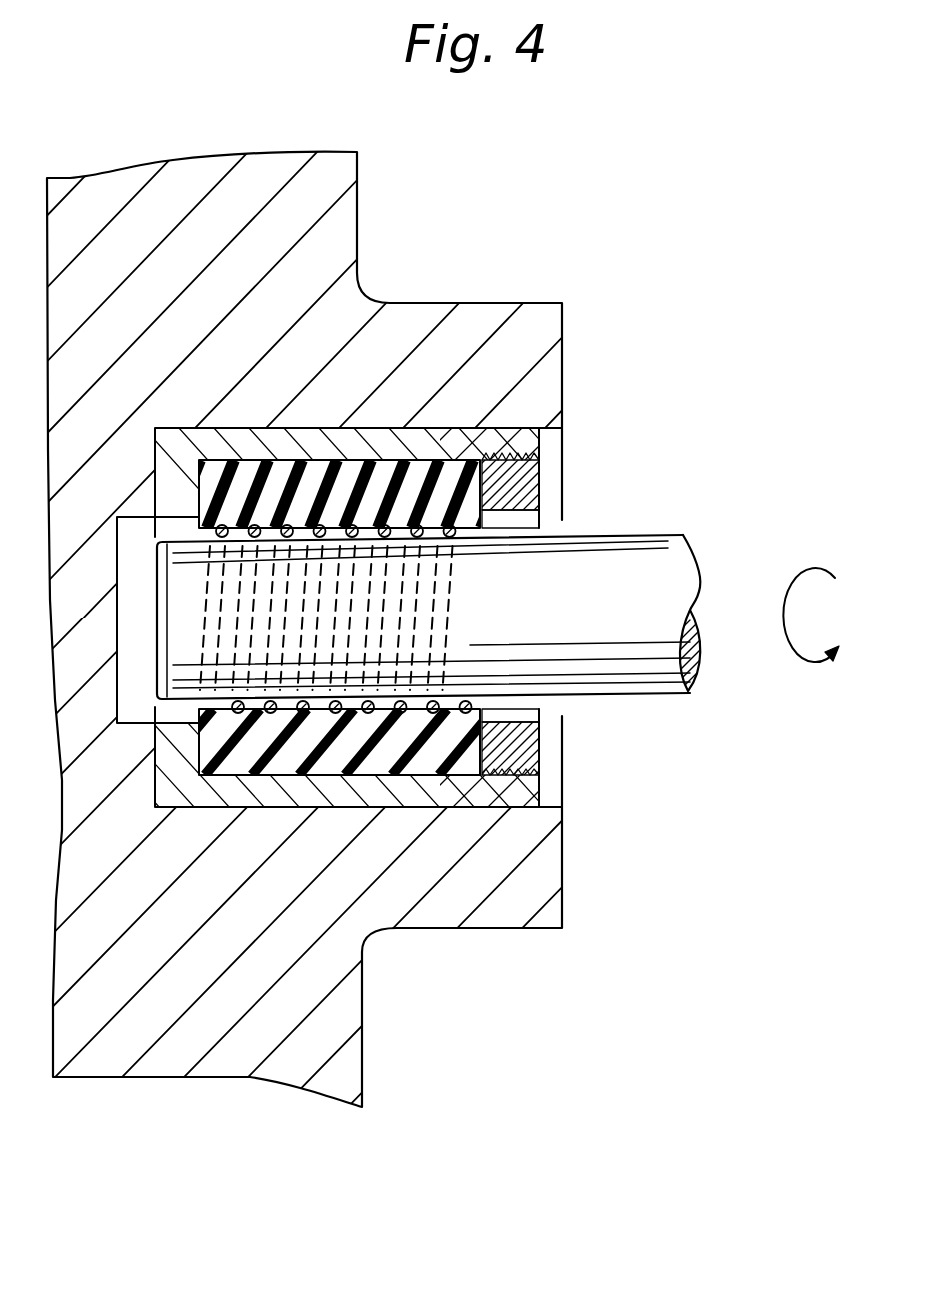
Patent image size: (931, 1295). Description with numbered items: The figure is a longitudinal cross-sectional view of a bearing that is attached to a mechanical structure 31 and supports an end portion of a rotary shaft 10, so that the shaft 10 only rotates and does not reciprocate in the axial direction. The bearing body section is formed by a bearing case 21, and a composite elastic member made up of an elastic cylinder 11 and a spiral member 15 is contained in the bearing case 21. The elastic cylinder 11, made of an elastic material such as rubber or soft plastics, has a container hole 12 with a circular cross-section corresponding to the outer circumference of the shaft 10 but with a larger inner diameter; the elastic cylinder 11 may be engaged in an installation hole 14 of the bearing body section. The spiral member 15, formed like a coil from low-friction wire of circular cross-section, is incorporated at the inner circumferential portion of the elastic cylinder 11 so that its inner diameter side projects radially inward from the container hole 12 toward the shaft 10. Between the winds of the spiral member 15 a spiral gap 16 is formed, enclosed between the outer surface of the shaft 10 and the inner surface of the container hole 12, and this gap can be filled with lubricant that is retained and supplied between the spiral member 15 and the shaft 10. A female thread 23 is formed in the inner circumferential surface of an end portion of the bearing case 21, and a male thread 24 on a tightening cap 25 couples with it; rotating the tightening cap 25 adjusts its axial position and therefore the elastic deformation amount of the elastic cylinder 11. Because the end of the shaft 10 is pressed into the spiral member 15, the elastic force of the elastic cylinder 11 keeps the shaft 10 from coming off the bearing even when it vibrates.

The shaft 10 is at (655, 552).
The elastic cylinder 11 is at (428, 753).
The container hole 12 is at (472, 533).
The installation hole 14 is at (476, 803).
The spiral member 15 is at (348, 527).
The spiral gap 16 is at (320, 710).
The bearing case 21 is at (452, 427).
The female thread 23 is at (531, 752).
The male thread 24 is at (536, 427).
The tightening cap 25 is at (539, 485).
The mechanical structure 31 is at (340, 237).